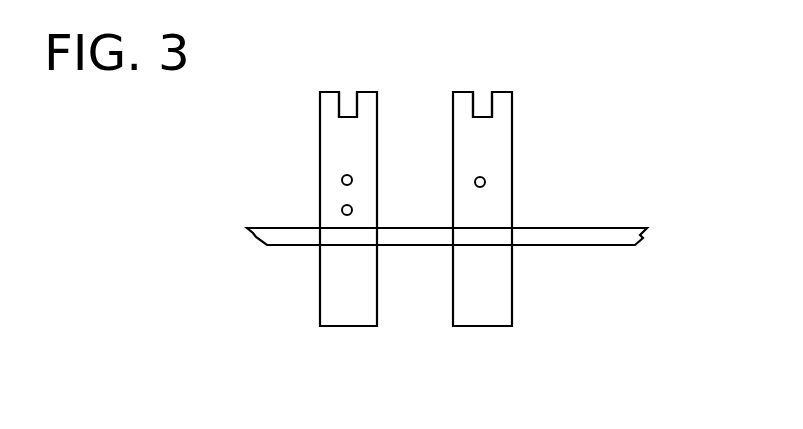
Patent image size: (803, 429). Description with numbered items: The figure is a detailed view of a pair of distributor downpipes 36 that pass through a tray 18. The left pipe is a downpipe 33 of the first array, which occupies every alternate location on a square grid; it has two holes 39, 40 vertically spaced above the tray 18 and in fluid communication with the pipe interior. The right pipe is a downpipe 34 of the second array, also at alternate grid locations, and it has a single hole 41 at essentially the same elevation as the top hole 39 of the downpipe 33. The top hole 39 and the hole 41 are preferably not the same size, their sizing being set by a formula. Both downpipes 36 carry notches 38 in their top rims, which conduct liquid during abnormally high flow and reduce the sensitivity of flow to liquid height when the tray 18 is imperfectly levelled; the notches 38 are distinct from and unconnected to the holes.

The tray 18 is at (572, 245).
The downpipe of first array 33 is at (318, 112).
The downpipe of second array 34 is at (513, 113).
The downpipes 36 is at (483, 350).
The notches 38 is at (483, 93).
The top hole 39 is at (343, 176).
The bottom hole 40 is at (343, 206).
The hole 41 is at (485, 179).